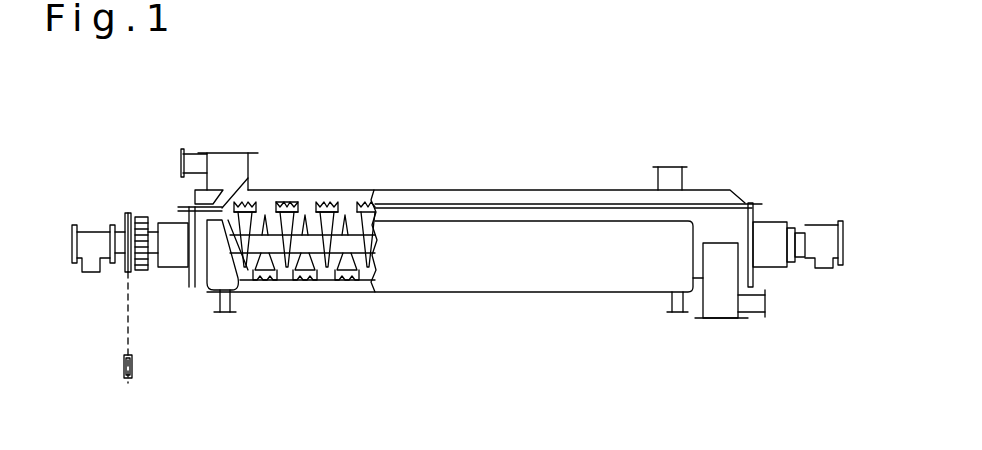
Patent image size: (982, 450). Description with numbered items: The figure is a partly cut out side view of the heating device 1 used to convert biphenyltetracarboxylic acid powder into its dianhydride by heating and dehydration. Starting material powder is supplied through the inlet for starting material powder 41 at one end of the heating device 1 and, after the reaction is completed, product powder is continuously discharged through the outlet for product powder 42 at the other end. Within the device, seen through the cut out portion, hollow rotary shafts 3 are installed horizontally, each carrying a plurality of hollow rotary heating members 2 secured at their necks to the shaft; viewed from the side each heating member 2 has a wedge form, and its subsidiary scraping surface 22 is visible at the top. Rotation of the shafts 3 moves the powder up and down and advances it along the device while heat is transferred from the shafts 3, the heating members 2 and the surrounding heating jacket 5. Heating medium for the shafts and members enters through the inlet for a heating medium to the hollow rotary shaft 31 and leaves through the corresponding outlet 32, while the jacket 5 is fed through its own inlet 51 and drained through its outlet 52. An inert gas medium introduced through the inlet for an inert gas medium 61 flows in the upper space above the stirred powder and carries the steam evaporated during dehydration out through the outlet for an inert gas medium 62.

The heating device 1 is at (494, 321).
The hollow rotary heating member 2 is at (331, 205).
The hollow rotary shaft 3 is at (304, 280).
The heating jacket 5 is at (268, 283).
The subsidiary scraping surface of a hollow rotary heating member 22 is at (287, 205).
The inlet for a heating medium to the hollow rotary shaft 31 is at (104, 272).
The outlet for a heating medium from the hollow rotary shaft 32 is at (818, 268).
The inlet for starting material powder 41 is at (244, 153).
The outlet for product powder 42 is at (715, 318).
The inlet for a heating medium to the heating jacket 51 is at (228, 313).
The outlet for a heating medium from the heating jacket 52 is at (677, 312).
The inlet for an inert gas medium 61 is at (675, 167).
The outlet for an inert gas medium 62 is at (182, 163).